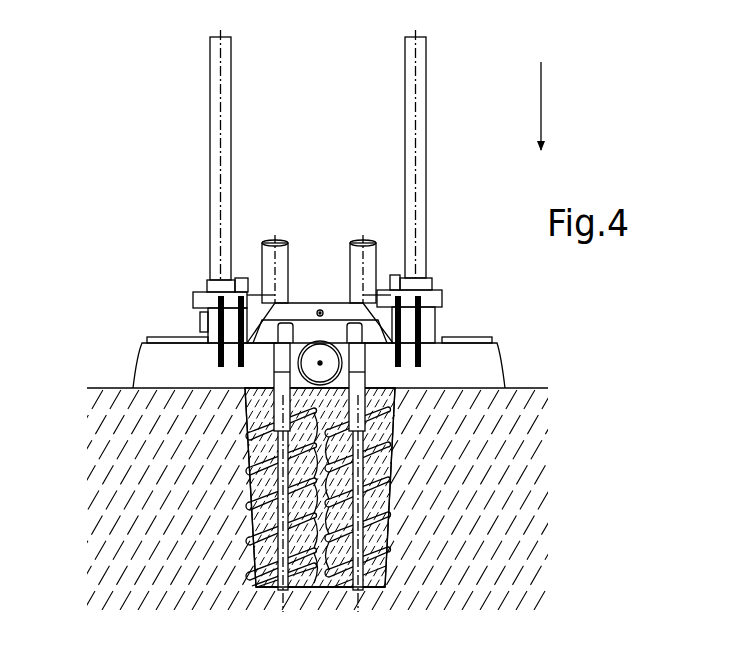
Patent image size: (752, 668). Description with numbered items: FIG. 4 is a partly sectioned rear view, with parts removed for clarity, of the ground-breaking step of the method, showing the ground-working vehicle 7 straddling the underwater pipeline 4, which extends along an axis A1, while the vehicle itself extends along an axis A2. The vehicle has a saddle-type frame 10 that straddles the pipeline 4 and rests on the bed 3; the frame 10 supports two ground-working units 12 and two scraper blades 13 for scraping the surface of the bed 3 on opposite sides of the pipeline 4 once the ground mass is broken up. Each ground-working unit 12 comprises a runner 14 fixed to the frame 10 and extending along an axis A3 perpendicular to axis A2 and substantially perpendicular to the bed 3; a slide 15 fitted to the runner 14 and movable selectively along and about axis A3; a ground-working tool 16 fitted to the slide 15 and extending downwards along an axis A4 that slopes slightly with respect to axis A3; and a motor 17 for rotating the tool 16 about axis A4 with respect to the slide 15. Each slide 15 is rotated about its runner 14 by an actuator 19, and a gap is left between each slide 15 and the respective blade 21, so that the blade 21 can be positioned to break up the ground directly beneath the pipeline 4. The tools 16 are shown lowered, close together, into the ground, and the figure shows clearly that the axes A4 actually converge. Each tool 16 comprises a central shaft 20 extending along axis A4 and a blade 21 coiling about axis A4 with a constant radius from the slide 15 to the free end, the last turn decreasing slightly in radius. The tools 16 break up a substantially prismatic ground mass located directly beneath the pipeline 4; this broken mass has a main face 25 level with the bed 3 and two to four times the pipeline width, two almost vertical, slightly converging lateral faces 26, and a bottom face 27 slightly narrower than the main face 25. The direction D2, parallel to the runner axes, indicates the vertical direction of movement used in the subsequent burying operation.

The bed 3 is at (525, 405).
The underwater pipeline 4 is at (277, 382).
The ground-working vehicle 7 is at (316, 197).
The saddle-type frame 10 is at (283, 318).
The ground-working unit 12 is at (441, 217).
The scraper blade 13 is at (152, 360).
The runner 14 is at (224, 143).
The slide 15 is at (200, 298).
The ground-working tool 16 is at (219, 448).
The motor 17 is at (283, 257).
The actuator 19 is at (240, 276).
The central shaft 20 is at (278, 568).
The blade 21 is at (278, 540).
The main face 25 is at (387, 386).
The lateral face 26 is at (248, 477).
The bottom face 27 is at (388, 572).
The axis A1 is at (320, 362).
The axis A2 is at (320, 310).
The axis A3 is at (223, 52).
The axis A4 is at (283, 597).
The direction D2 is at (541, 118).